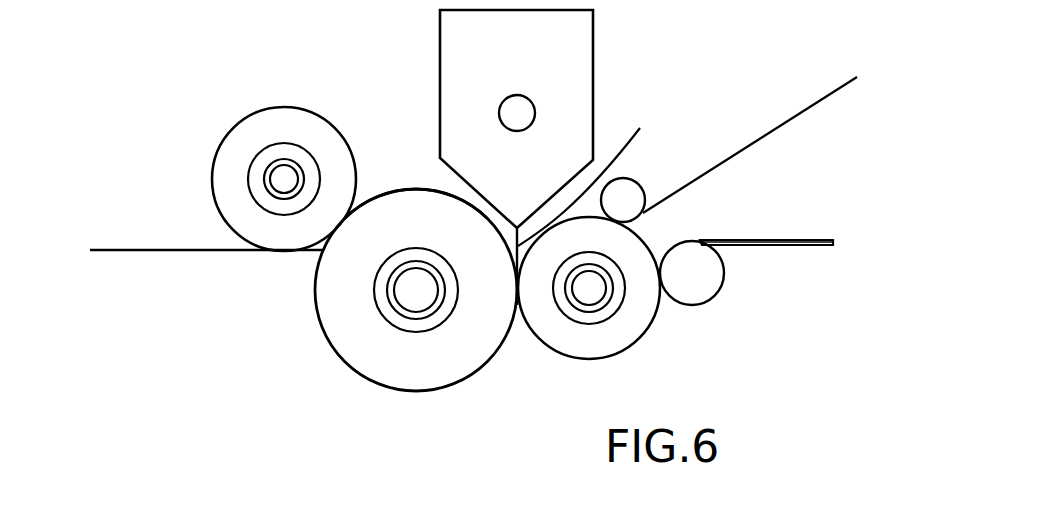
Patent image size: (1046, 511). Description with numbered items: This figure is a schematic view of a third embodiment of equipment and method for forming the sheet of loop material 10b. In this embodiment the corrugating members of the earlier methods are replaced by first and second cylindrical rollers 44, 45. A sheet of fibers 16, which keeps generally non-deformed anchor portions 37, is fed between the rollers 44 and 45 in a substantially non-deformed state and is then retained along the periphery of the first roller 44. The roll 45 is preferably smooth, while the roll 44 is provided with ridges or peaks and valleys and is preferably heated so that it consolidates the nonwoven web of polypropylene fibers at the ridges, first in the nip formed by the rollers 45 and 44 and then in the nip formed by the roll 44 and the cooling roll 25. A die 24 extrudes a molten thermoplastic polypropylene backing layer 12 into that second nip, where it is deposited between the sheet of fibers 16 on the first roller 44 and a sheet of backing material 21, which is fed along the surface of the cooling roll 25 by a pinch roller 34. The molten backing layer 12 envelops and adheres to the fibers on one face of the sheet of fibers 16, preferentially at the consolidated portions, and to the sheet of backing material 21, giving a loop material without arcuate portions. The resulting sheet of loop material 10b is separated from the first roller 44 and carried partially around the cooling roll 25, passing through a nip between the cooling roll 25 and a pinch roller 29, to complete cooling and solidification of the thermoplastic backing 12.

The sheet of fibers 16 is at (157, 250).
The second cylindrical roller 45 is at (277, 115).
The first cylindrical roller 44 is at (392, 373).
The anchor portions 37 is at (402, 189).
The die 24 is at (587, 57).
The backing layer 12 is at (600, 204).
The cooling roll 25 is at (630, 335).
The pinch roller 34 is at (628, 188).
The pinch roller 29 is at (715, 283).
The sheet of backing material 21 is at (762, 138).
The sheet of loop material 10b is at (730, 240).